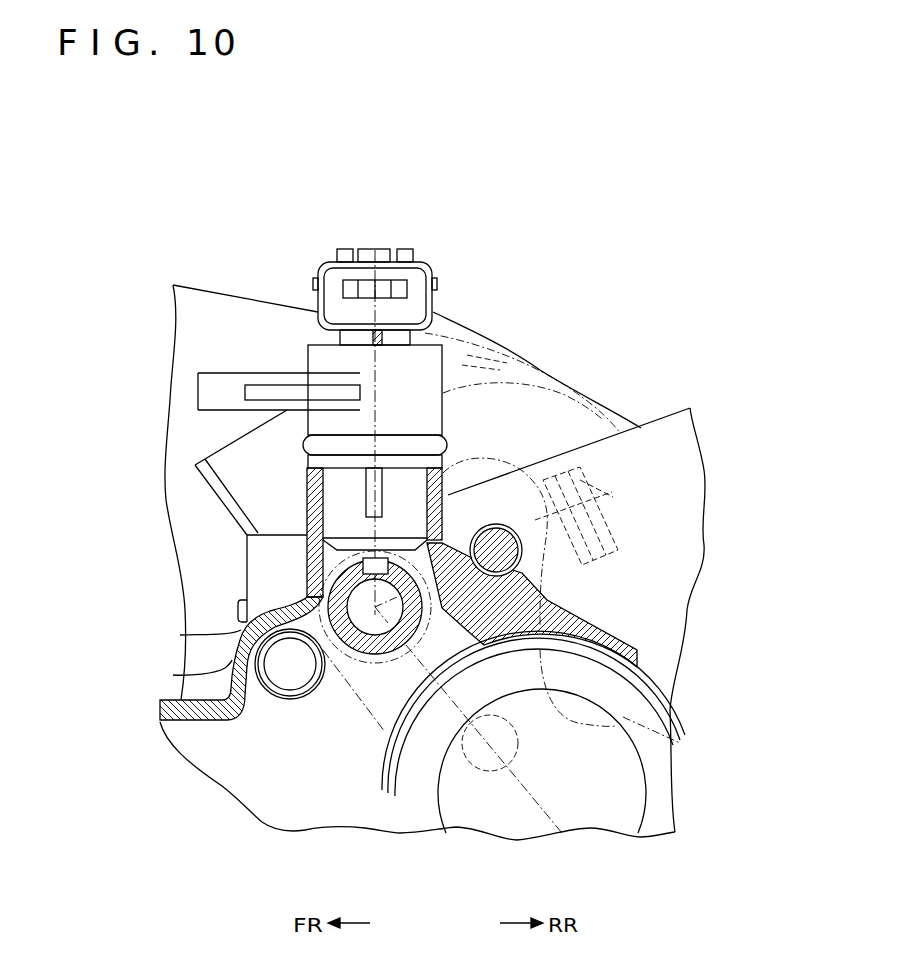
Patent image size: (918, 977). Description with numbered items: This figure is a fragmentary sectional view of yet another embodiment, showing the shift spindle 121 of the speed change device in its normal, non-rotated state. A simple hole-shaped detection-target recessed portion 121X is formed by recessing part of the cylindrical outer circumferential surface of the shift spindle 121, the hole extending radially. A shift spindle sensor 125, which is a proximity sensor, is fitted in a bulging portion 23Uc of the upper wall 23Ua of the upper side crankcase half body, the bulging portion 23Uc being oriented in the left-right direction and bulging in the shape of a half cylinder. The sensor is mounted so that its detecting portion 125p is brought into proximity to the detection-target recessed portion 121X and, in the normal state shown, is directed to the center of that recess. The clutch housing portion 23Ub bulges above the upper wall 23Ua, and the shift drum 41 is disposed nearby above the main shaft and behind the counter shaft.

The clutch housing portion 23Ub is at (221, 292).
The shift spindle sensor 125 is at (420, 383).
The detecting portion 125p is at (363, 567).
The bulging portion 23Uc is at (512, 485).
The detection-target recessed portion 121X is at (322, 557).
The upper wall 23Ua is at (180, 672).
The shift spindle 121 is at (377, 652).
The shift drum 41 is at (407, 803).